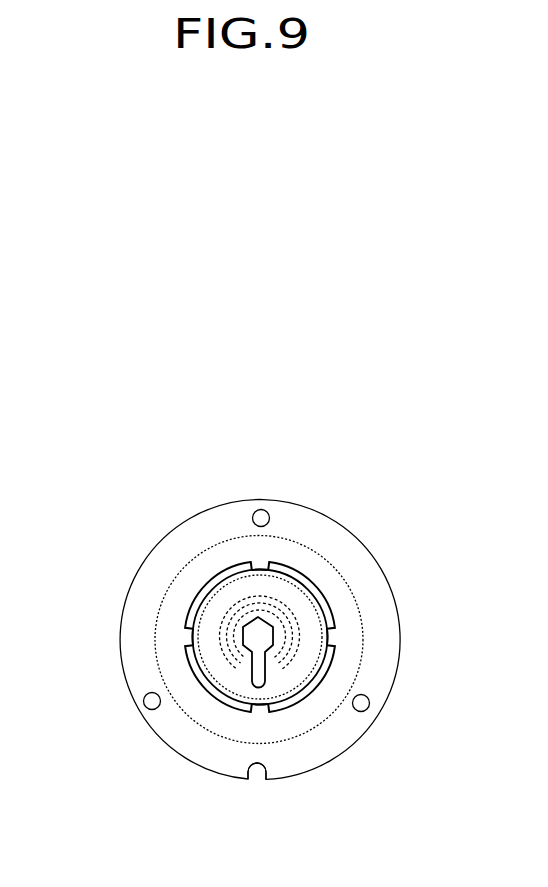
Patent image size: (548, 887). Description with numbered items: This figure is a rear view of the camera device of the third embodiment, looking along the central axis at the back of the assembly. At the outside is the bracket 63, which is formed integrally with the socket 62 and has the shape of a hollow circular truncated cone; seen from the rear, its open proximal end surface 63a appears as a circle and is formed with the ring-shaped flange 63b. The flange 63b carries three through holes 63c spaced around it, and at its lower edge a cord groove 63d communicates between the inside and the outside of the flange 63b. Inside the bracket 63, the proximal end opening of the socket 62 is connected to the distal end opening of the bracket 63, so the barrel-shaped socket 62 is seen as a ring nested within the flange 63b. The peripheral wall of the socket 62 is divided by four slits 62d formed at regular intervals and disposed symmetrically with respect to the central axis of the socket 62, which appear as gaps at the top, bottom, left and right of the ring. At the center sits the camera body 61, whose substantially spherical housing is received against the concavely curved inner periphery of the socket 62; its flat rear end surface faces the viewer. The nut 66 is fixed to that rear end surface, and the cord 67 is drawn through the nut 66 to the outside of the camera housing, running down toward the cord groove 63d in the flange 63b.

The camera body 61 is at (222, 572).
The socket 62 is at (318, 592).
The slits 62d is at (250, 562).
The bracket 63 is at (182, 591).
The proximal end surface 63a is at (193, 711).
The ring-shaped flange 63b is at (377, 608).
The through holes 63c is at (264, 510).
The cord groove 63d is at (254, 784).
The nut 66 is at (270, 618).
The cord 67 is at (249, 656).